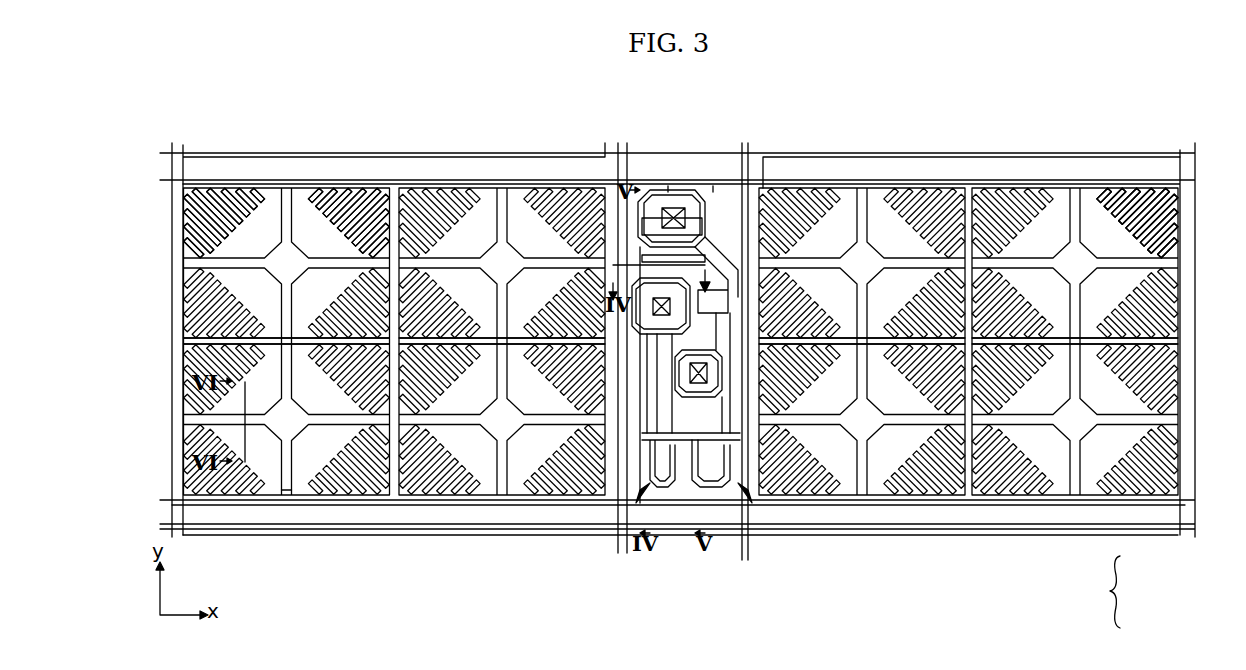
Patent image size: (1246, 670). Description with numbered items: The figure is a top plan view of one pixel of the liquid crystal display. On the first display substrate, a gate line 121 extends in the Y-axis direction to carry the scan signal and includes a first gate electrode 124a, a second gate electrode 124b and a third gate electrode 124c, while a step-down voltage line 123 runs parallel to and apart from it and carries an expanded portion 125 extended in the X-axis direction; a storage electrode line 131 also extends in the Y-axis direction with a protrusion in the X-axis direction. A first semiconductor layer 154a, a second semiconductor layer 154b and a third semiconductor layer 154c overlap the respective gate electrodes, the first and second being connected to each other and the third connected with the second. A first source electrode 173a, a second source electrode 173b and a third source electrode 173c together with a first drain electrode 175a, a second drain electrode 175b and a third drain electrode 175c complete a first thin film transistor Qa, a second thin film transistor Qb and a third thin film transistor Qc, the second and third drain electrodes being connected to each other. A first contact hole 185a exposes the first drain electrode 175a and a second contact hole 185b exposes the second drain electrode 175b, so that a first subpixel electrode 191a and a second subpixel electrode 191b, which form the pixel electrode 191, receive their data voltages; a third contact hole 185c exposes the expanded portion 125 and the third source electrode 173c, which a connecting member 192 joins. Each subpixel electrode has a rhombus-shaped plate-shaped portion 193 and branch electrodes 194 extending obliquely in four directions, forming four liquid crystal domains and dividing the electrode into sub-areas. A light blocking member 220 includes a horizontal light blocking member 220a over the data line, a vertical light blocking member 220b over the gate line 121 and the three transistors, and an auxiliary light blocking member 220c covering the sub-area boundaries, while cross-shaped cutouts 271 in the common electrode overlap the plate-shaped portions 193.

The gate line 121 is at (630, 505).
The step-down voltage line 123 is at (620, 146).
The first gate electrode 124a is at (688, 480).
The second gate electrode 124b is at (722, 480).
The third gate electrode 124c is at (720, 262).
The expanded portion 125 is at (672, 215).
The storage electrode line 131 is at (172, 148).
The first semiconductor layer 154a is at (700, 470).
The second semiconductor layer 154b is at (716, 400).
The third semiconductor layer 154c is at (712, 280).
The first source electrode 173a is at (668, 420).
The second source electrode 173b is at (708, 430).
The third source electrode 173c is at (733, 258).
The first drain electrode 175a is at (652, 345).
The second drain electrode 175b is at (726, 450).
The third drain electrode 175c is at (730, 300).
The first contact hole 185a is at (650, 320).
The second contact hole 185b is at (770, 385).
The third contact hole 185c is at (678, 210).
The pixel electrode 191 is at (160, 515).
The first subpixel electrode 191a is at (380, 193).
The second subpixel electrode 191b is at (957, 193).
The connecting member 192 is at (716, 190).
The plate-shaped portion 193 is at (310, 222).
The branch electrodes 194 is at (232, 212).
The light blocking member 220 is at (1124, 588).
The horizontal light blocking member 220a is at (540, 156).
The vertical light blocking member 220b is at (597, 157).
The auxiliary light blocking member 220c is at (357, 343).
The cross-shaped cutouts 271 is at (293, 473).
The first thin film transistor Qa is at (660, 470).
The second thin film transistor Qb is at (703, 380).
The third thin film transistor Qc is at (703, 205).